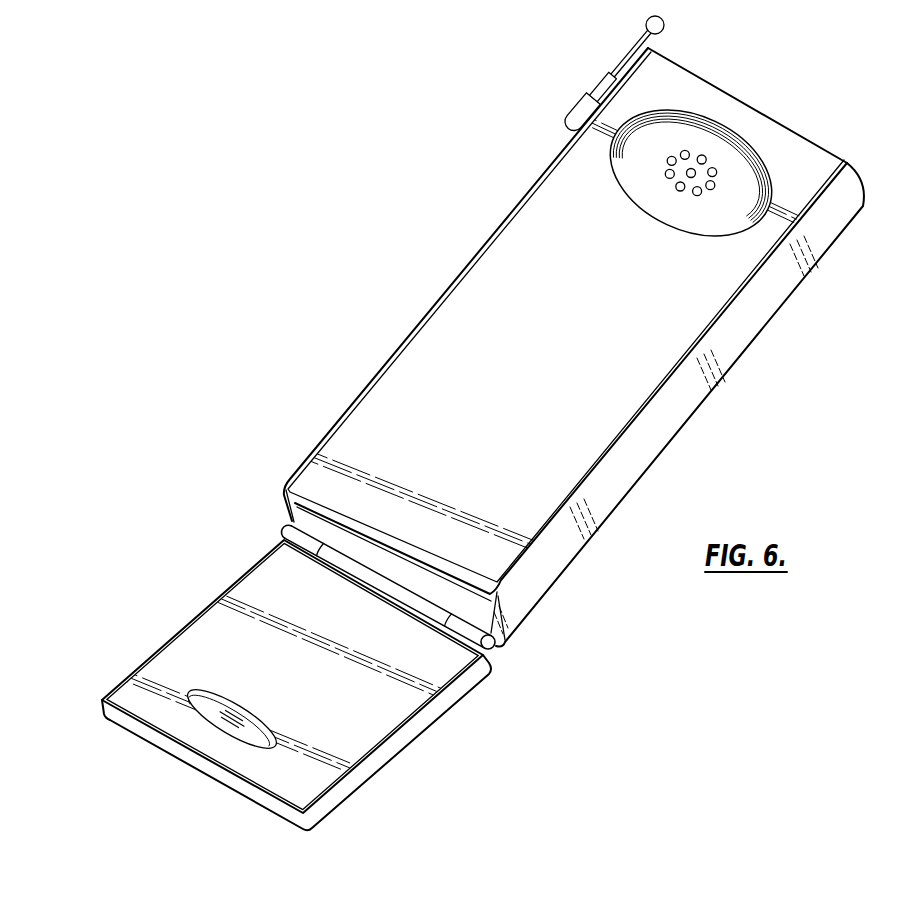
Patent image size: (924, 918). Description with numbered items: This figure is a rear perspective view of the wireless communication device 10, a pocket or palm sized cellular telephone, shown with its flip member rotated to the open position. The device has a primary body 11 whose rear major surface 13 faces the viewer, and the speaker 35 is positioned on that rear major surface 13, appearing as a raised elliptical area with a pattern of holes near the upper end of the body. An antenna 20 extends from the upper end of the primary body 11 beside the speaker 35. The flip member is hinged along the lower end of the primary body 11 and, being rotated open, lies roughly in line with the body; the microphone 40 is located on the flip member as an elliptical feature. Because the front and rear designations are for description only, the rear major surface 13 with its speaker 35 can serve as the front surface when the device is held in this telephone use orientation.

The wireless communication device 10 is at (500, 423).
The primary body 11 is at (670, 435).
The rear major surface 13 is at (444, 330).
The antenna 20 is at (612, 72).
The speaker 35 is at (697, 217).
The microphone 40 is at (262, 731).